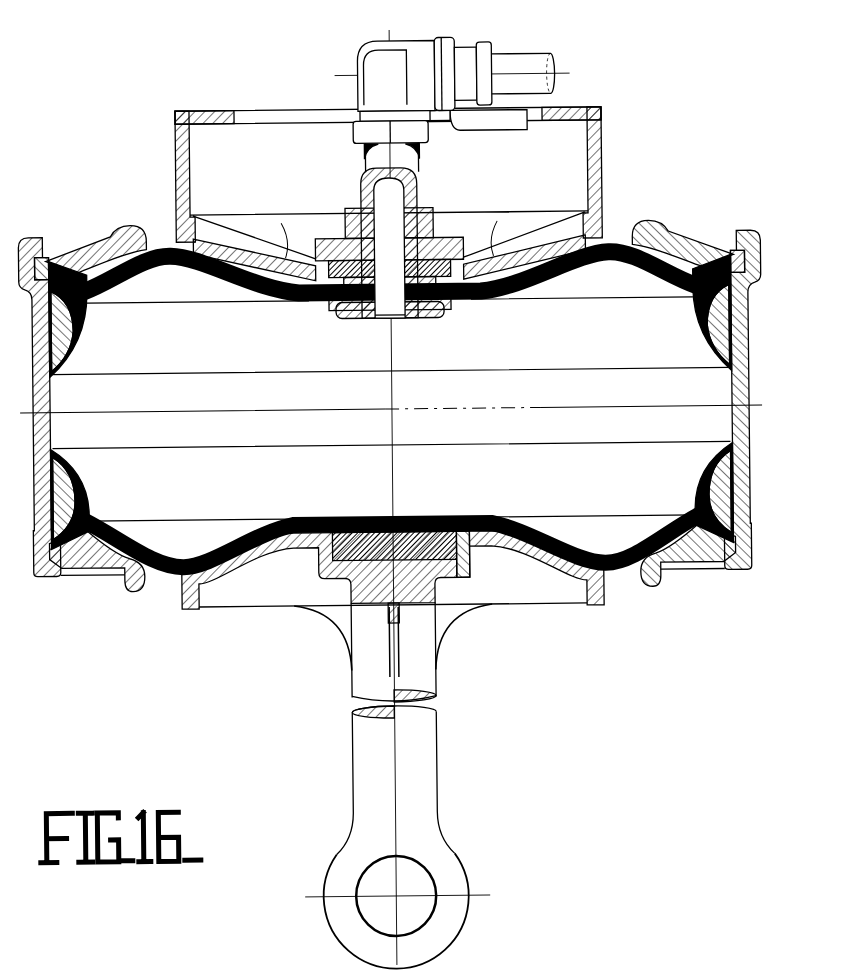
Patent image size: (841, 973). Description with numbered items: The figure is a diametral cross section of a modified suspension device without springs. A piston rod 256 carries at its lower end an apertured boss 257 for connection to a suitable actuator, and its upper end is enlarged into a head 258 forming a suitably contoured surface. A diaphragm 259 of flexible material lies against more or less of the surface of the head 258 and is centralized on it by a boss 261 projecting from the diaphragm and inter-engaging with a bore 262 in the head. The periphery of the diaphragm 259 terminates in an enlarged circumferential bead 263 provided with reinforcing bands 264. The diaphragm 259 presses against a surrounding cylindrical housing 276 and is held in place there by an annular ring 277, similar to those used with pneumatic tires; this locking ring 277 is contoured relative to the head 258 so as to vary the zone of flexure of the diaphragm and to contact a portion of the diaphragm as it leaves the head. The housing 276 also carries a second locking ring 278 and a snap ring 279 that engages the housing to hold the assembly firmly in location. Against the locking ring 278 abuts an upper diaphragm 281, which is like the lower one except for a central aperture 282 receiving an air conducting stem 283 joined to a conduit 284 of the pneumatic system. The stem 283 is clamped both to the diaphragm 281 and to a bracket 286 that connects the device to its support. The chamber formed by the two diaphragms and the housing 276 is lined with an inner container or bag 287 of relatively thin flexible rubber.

The piston rod 256 is at (420, 801).
The apertured boss 257 is at (448, 879).
The head 258 is at (571, 537).
The diaphragm 259 is at (300, 520).
The boss 261 is at (409, 520).
The bore 262 is at (472, 520).
The circumferential bead 263 is at (706, 333).
The reinforcing bands 264 is at (698, 320).
The cylindrical housing 276 is at (40, 423).
The annular ring 277 is at (108, 556).
The second locking ring 278 is at (135, 229).
The snap ring 279 is at (48, 258).
The diaphragm 281 is at (139, 274).
The central aperture 282 is at (450, 304).
The air conducting stem 283 is at (366, 187).
The conduit 284 is at (532, 58).
The bracket 286 is at (600, 170).
The inner container or bag 287 is at (269, 297).